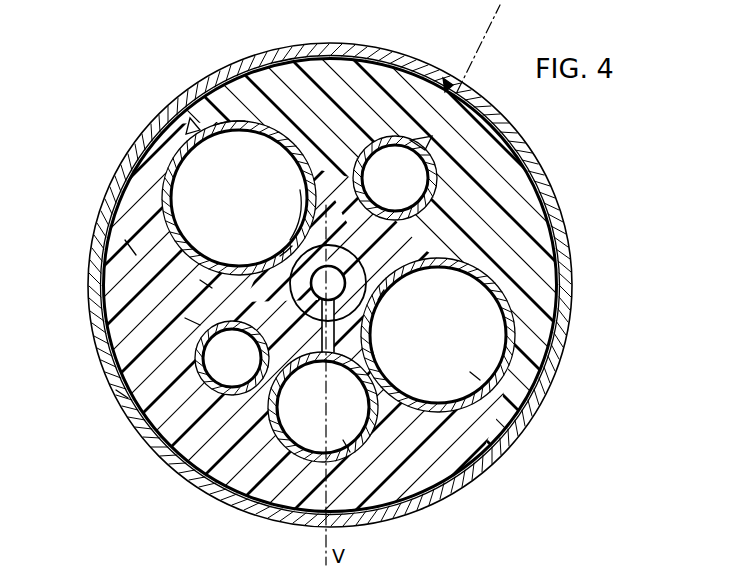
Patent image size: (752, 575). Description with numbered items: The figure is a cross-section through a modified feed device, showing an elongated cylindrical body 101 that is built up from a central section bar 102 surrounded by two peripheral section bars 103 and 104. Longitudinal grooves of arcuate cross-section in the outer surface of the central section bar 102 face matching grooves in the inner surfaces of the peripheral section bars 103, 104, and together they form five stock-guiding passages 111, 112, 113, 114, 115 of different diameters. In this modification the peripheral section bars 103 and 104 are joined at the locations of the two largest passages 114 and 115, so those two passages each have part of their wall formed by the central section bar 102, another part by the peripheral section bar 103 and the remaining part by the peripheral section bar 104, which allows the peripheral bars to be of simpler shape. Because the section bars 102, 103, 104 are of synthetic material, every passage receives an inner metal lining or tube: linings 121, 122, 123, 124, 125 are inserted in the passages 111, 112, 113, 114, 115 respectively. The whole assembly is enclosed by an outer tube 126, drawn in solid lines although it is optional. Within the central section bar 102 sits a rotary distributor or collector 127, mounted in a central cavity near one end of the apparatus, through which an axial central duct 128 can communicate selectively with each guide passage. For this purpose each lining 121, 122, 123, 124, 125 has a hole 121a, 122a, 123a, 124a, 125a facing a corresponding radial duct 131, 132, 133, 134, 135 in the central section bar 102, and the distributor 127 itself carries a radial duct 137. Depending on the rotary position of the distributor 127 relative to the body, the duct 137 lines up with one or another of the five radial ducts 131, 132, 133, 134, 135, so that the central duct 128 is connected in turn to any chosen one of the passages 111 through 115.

The elongated cylindrical body 101 is at (418, 50).
The central section bar 102 is at (205, 284).
The peripheral section bar 103 is at (197, 127).
The peripheral section bar 104 is at (130, 248).
The guide passage 111 is at (128, 395).
The guide passage 112 is at (420, 160).
The guide passage 113 is at (343, 440).
The guide passage 114 is at (477, 375).
The guide passage 115 is at (228, 126).
The lining 121 is at (152, 447).
The hole 121a is at (262, 337).
The lining 122 is at (438, 185).
The hole 122a is at (420, 142).
The lining 123 is at (288, 460).
The hole 123a is at (292, 378).
The lining 124 is at (518, 333).
The hole 124a is at (375, 312).
The lining 125 is at (273, 122).
The hole 125a is at (292, 250).
The outer tube 126 is at (570, 232).
The rotary distributor or collector 127 is at (187, 475).
The central duct 128 is at (287, 260).
The radial duct 131 is at (190, 320).
The radial duct 132 is at (408, 276).
The radial duct 133 is at (373, 350).
The radial duct 134 is at (383, 297).
The radial duct 135 is at (307, 203).
The radial duct 137 is at (247, 270).